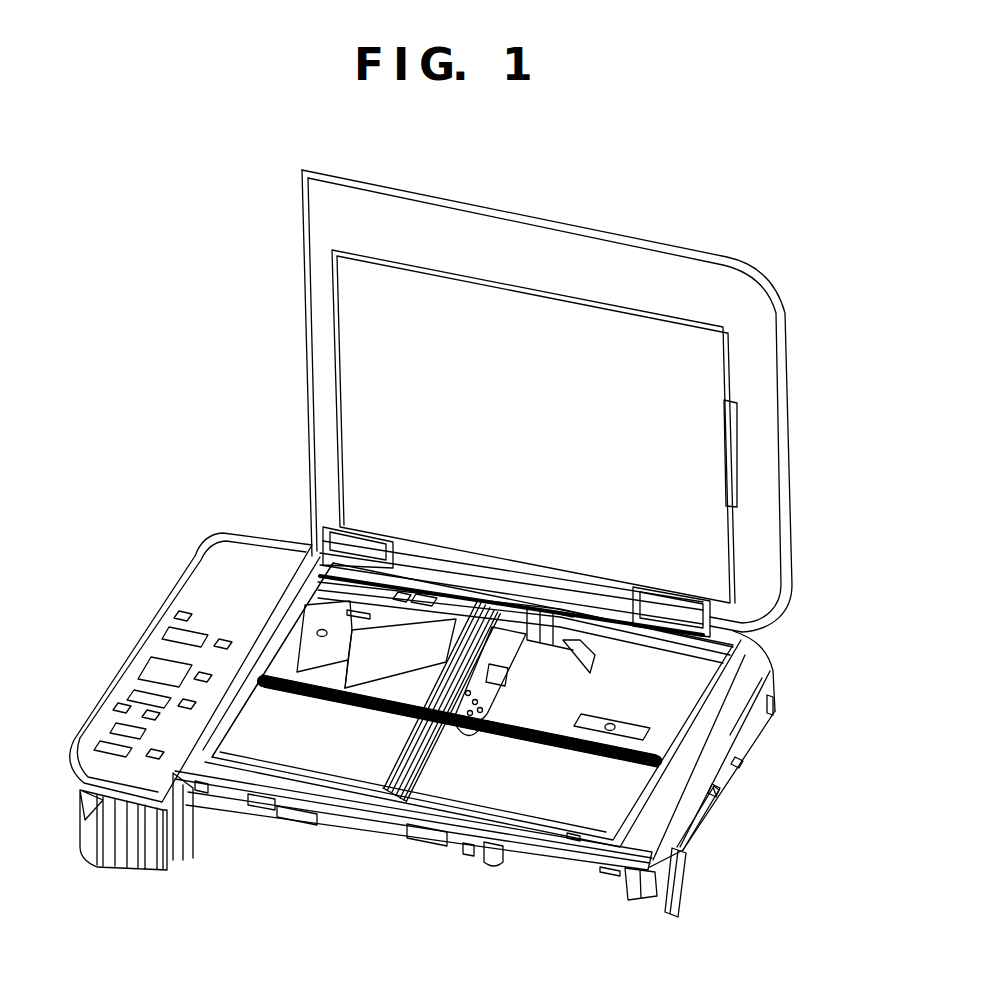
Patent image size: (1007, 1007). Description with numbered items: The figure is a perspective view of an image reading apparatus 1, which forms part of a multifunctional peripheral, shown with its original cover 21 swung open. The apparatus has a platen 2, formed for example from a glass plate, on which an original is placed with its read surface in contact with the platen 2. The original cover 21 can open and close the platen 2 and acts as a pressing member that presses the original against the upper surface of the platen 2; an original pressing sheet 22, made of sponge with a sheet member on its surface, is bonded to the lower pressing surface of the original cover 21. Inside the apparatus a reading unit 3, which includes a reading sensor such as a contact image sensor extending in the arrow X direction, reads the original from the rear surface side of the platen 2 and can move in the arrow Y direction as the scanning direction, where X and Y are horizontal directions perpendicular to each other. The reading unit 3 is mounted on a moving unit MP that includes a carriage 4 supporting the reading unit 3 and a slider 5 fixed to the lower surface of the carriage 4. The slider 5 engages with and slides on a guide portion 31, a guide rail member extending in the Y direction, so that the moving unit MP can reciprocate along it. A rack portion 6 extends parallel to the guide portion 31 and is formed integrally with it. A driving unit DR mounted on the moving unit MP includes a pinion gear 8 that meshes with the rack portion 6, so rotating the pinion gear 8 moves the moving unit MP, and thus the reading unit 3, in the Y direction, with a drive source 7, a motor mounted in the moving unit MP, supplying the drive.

The image reading apparatus 1 is at (787, 758).
The platen 2 is at (550, 807).
The reading unit 3 is at (395, 767).
The carriage 4 is at (495, 735).
The slider 5 is at (510, 702).
The rack portion 6 is at (660, 723).
The drive source 7 is at (513, 693).
The pinion gear 8 is at (458, 740).
The original cover 21 is at (739, 287).
The original pressing sheet 22 is at (705, 443).
The guide portion 31 is at (300, 668).
The moving unit MP is at (472, 752).
The driving unit DR is at (523, 742).
The X direction X is at (232, 828).
The Y direction Y is at (363, 907).